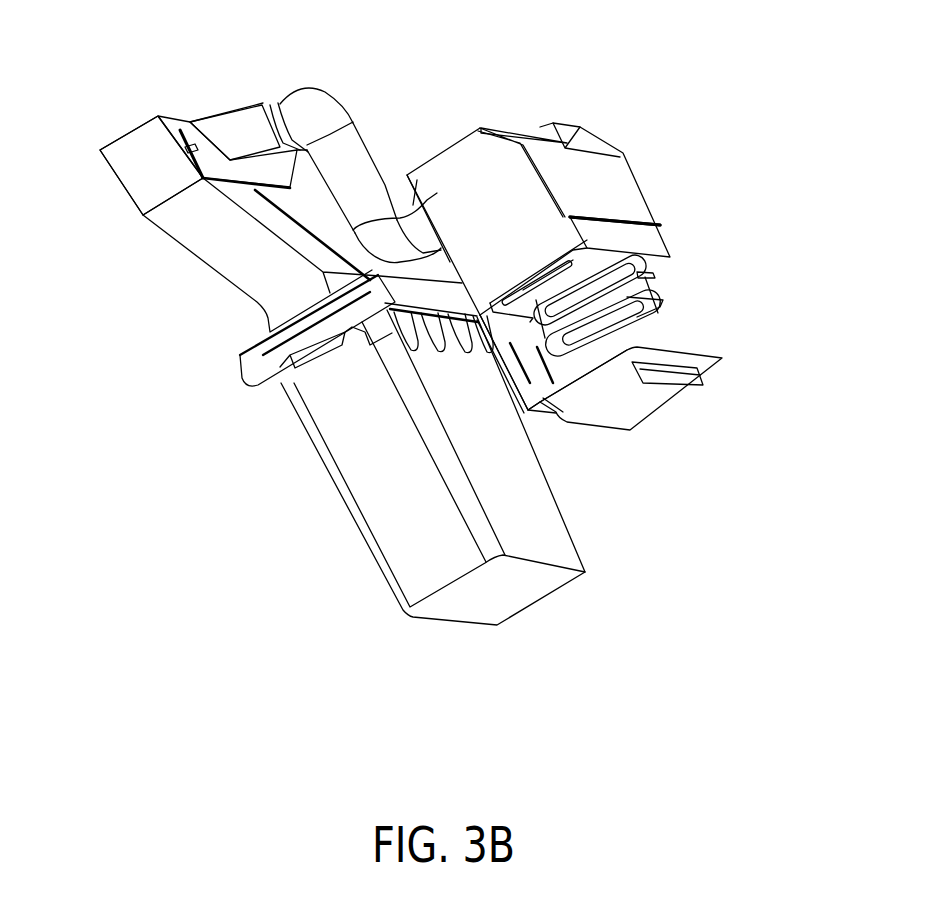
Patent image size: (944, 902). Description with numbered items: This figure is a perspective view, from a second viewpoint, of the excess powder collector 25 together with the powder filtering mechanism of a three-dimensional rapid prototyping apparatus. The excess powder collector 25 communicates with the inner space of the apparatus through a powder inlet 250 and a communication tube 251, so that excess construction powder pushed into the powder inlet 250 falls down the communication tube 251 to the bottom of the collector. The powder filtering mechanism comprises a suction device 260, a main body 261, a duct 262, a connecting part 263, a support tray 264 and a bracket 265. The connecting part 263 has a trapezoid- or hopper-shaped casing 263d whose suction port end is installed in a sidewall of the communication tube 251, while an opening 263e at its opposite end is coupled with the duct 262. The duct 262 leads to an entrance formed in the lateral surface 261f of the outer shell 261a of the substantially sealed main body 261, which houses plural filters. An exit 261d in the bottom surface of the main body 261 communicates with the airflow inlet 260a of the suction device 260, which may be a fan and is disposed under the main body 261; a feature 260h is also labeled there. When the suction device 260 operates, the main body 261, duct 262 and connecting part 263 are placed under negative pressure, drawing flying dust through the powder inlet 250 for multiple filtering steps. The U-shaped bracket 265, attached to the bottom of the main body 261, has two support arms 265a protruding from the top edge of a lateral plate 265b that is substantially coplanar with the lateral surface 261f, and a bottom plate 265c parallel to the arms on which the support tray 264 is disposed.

The excess powder collector 25 is at (318, 496).
The powder inlet 250 is at (135, 128).
The communication tube 251 is at (150, 180).
The suction device 260 is at (620, 330).
The airflow inlet 260a is at (617, 265).
The positioning projection 260h is at (655, 265).
The main body 261 is at (587, 168).
The outer shell 261a is at (470, 170).
The exit 261d is at (605, 258).
The lateral surface 261f is at (407, 185).
The duct 262 is at (344, 172).
The connecting part 263 is at (201, 90).
The casing 263d is at (242, 128).
The opening 263e is at (268, 108).
The support tray 264 is at (655, 395).
The bracket 265 is at (655, 506).
The support arms 265a is at (600, 405).
The lateral plate 265b is at (540, 410).
The bottom plate 265c is at (558, 408).